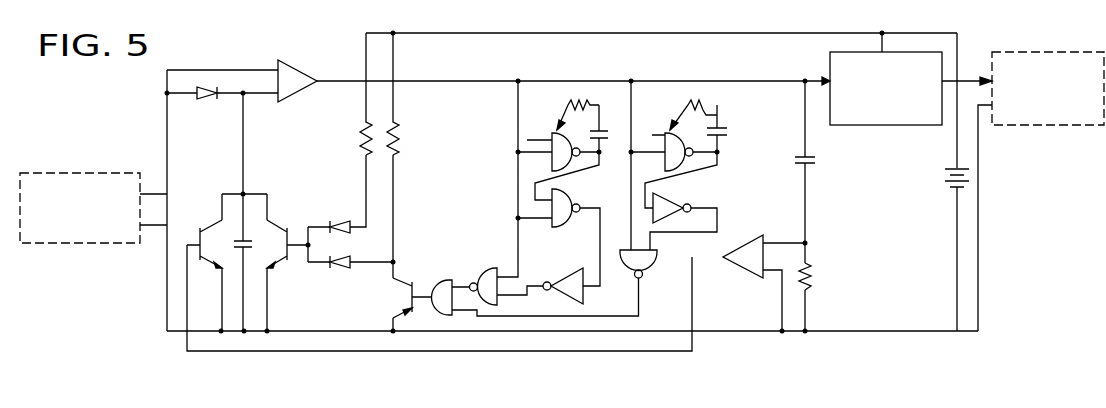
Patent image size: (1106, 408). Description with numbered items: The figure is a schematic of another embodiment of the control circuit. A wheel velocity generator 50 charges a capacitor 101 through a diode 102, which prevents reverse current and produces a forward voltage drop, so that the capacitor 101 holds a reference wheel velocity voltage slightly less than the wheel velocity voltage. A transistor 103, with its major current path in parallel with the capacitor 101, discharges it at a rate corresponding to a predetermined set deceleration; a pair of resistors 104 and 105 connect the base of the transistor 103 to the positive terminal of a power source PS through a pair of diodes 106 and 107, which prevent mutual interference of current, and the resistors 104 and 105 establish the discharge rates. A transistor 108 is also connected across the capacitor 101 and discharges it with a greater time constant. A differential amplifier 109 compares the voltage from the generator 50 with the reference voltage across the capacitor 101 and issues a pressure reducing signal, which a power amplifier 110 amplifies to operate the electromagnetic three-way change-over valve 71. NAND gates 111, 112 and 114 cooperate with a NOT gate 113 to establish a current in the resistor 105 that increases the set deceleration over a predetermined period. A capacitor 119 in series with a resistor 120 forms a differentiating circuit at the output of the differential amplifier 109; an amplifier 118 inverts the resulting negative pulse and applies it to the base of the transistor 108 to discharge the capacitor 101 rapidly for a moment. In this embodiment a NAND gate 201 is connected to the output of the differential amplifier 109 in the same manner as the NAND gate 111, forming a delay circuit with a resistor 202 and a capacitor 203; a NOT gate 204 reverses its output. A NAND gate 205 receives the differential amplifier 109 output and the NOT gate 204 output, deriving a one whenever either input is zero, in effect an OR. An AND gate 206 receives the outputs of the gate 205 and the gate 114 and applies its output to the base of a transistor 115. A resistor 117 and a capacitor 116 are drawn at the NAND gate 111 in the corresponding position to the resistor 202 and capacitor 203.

The wheel velocity generator 50 is at (78, 172).
The electromagnetic three-way change-over valve 71 is at (1040, 52).
The capacitor 101 is at (247, 239).
The diode 102 is at (214, 100).
The transistor 103 is at (279, 262).
The resistor 104 is at (362, 122).
The resistor 105 is at (398, 122).
The diode 106 is at (366, 224).
The diode 107 is at (338, 268).
The transistor 108 is at (218, 229).
The differential amplifier 109 is at (291, 70).
The power amplifier 110 is at (830, 61).
The NAND gate 111 is at (527, 140).
The NAND gate 112 is at (564, 189).
The NOT gate 113 is at (580, 270).
The NAND gate 114 is at (486, 262).
The transistor 115 is at (410, 302).
The capacitor 116 is at (603, 128).
The resistor 117 is at (571, 103).
The amplifier 118 is at (742, 246).
The capacitor 119 is at (815, 162).
The resistor 120 is at (815, 284).
The NAND gate 201 is at (652, 135).
The resistor 202 is at (708, 100).
The capacitor 203 is at (727, 131).
The NOT gate 204 is at (686, 195).
The NAND gate 205 is at (660, 258).
The AND gate 206 is at (456, 280).
The power source PS is at (955, 188).